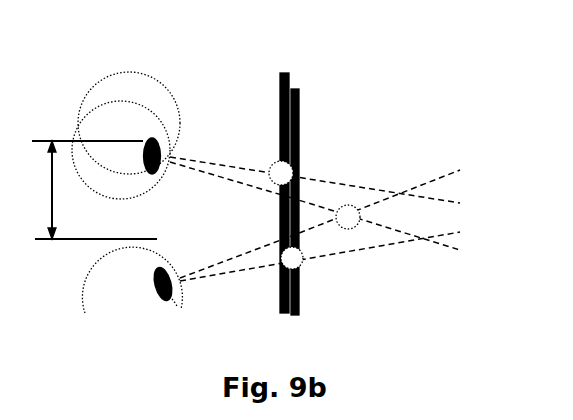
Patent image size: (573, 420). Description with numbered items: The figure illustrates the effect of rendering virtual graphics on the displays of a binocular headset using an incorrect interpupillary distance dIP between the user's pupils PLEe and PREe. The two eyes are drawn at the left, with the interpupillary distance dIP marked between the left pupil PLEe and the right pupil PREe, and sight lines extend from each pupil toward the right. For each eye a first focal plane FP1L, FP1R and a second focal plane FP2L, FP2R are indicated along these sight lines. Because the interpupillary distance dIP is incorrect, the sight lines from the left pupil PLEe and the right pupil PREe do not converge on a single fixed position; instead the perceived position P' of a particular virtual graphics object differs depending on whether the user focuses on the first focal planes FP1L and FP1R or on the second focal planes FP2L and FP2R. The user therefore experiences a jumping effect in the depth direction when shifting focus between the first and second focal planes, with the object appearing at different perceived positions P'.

The user's left pupil PLEe is at (109, 111).
The user's right pupil PREe is at (113, 307).
The interpupillary distance dIP is at (85, 190).
The first focal plane (left) FP1L is at (206, 109).
The second focal plane (left) FP2L is at (371, 137).
The first focal plane (right) FP1R is at (214, 298).
The second focal plane (right) FP2R is at (375, 268).
The perceived position of virtual graphics object P' is at (359, 146).